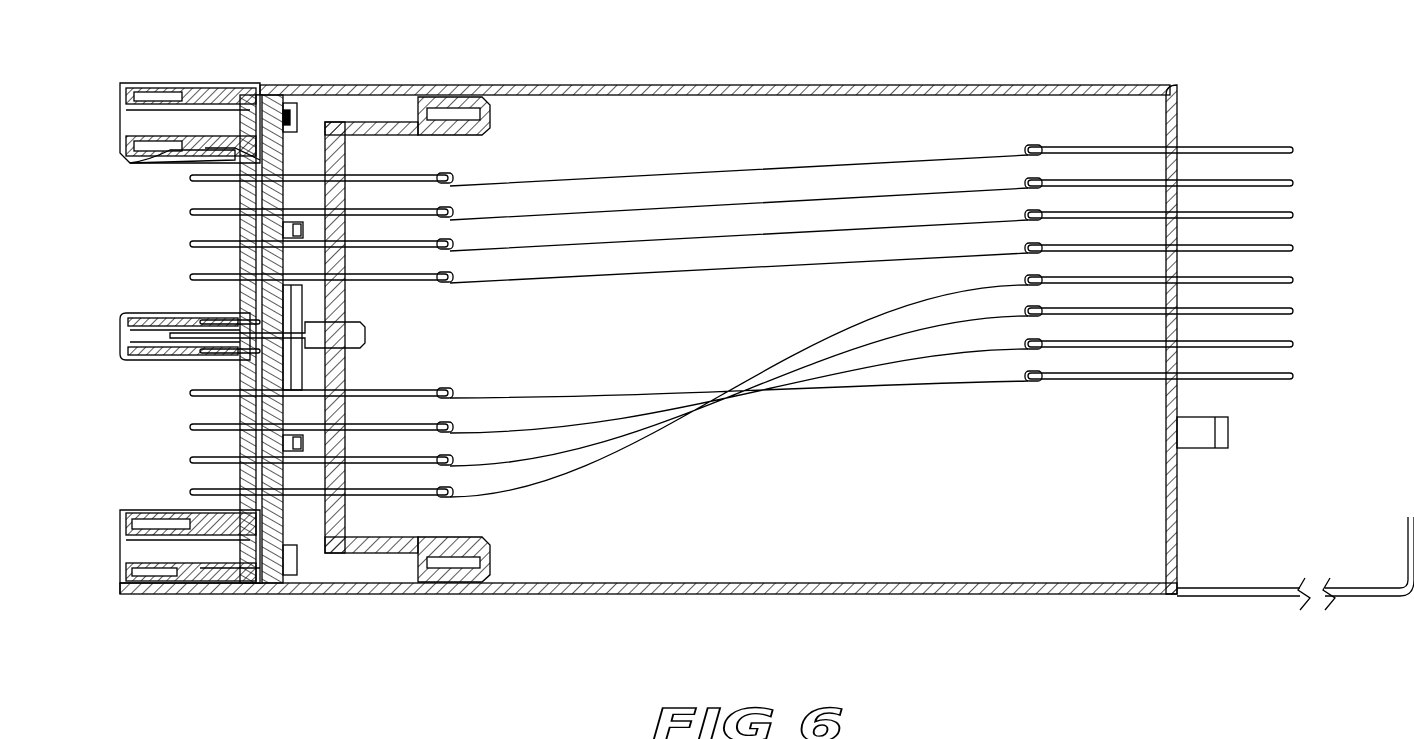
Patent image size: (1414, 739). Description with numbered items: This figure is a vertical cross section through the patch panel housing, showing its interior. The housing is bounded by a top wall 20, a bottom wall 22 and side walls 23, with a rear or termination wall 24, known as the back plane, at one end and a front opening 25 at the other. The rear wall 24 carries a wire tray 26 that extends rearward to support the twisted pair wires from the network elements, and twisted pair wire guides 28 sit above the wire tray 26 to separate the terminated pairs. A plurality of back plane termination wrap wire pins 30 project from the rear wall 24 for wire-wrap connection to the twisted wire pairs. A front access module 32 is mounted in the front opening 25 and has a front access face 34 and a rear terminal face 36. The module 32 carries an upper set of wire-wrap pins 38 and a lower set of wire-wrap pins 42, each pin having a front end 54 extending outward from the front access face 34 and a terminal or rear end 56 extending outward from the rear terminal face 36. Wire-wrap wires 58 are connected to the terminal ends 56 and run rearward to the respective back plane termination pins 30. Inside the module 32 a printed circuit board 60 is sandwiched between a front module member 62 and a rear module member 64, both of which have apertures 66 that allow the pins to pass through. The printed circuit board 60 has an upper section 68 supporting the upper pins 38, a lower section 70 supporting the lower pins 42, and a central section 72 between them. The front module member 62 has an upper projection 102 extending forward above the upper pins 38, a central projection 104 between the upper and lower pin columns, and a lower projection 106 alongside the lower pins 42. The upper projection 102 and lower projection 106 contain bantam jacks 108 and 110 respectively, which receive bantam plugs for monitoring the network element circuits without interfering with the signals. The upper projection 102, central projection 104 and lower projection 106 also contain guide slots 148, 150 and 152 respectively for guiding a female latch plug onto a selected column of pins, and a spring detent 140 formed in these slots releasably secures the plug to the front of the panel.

The top wall 20 is at (710, 85).
The bottom wall 22 is at (798, 594).
The side walls 23 is at (891, 503).
The rear or termination wall 24 is at (1177, 522).
The front opening 25 is at (122, 594).
The wire tray 26 is at (1225, 588).
The twisted pair wire guides 28 is at (1228, 428).
The back plane termination wrap wire pins 30 is at (1293, 183).
The front access module 32 is at (456, 344).
The front access face 34 is at (240, 440).
The rear terminal face 36 is at (345, 372).
The upper set of wire-wrap pins 38 is at (352, 212).
The lower set of wire-wrap pins 42 is at (368, 458).
The front end 54 is at (190, 210).
The terminal or rear end 56 is at (455, 214).
The wire-wrap wires 58 is at (860, 355).
The printed circuit board 60 is at (240, 258).
The front module member 62 is at (162, 512).
The rear module member 64 is at (470, 540).
The apertures 66 is at (345, 393).
The upper section 68 is at (283, 95).
The lower section 70 is at (285, 562).
The central section 72 is at (302, 320).
The upper projection 102 is at (125, 97).
The central projection 104 is at (120, 327).
The lower projection 106 is at (120, 538).
The bantam jacks 108 is at (126, 122).
The bantam jacks 110 is at (128, 569).
The spring detent 140 is at (208, 176).
The guide slot 148 is at (140, 168).
The guide slot 150 is at (180, 318).
The guide slot 152 is at (138, 516).